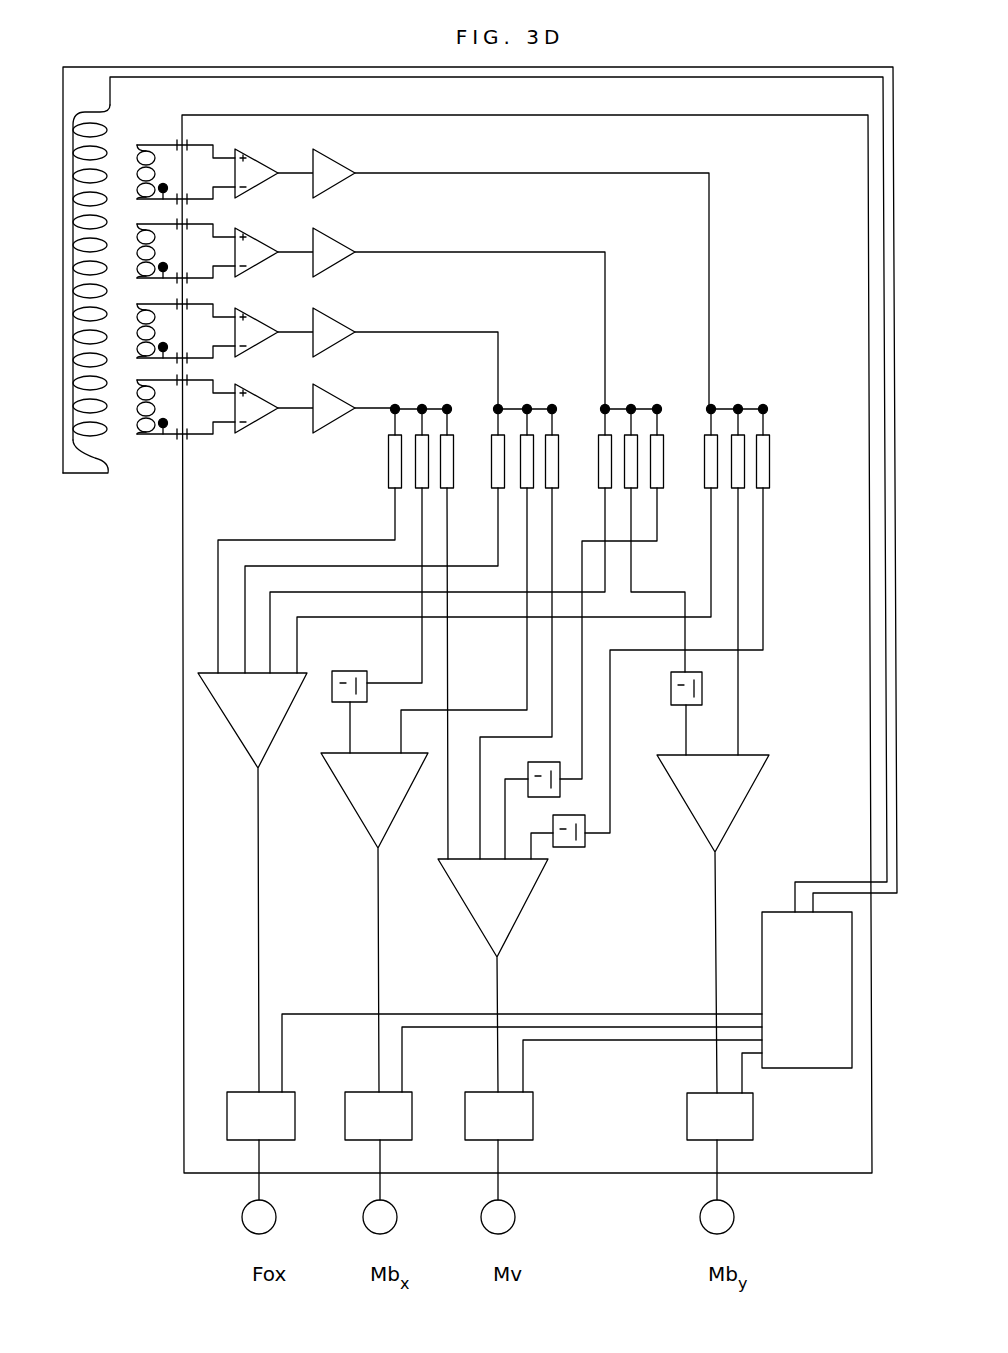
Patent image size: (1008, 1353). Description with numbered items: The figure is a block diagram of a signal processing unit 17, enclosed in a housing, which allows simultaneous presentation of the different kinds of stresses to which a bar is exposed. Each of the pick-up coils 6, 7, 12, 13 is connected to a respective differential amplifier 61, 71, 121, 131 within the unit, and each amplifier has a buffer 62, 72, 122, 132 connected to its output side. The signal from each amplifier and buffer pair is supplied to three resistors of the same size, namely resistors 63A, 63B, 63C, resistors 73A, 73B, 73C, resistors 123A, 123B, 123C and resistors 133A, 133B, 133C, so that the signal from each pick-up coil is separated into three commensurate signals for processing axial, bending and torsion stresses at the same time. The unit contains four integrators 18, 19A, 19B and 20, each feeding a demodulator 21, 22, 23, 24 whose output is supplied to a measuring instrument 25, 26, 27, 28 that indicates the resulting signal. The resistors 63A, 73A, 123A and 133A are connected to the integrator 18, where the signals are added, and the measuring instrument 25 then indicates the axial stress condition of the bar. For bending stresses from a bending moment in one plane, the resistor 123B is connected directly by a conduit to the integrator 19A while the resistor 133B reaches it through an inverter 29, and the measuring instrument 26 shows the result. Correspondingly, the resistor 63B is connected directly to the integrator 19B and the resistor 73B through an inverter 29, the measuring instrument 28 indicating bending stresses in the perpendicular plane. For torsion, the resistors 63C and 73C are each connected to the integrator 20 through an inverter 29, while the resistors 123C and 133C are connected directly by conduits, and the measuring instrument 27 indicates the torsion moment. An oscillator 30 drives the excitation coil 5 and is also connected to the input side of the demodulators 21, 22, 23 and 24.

The excitation coil 5 is at (93, 473).
The pick-up coil 6 is at (143, 152).
The pick-up coil 7 is at (143, 232).
The pick-up coil 12 is at (140, 322).
The pick-up coil 13 is at (138, 404).
The signal processing unit 17 is at (166, 758).
The integrator 18 is at (247, 728).
The integrator 19A is at (360, 798).
The integrator 19B is at (735, 805).
The integrator 20 is at (512, 902).
The demodulator 21 is at (240, 1106).
The demodulator 22 is at (356, 1105).
The demodulator 23 is at (478, 1105).
The demodulator 24 is at (695, 1112).
The measuring instrument 25 is at (262, 1235).
The measuring instrument 26 is at (384, 1236).
The measuring instrument 27 is at (498, 1236).
The measuring instrument 28 is at (716, 1236).
The inverter 29 is at (343, 671).
The oscillator 30 is at (775, 928).
The differential amplifier 61 is at (262, 168).
The buffer 62 is at (342, 170).
The differential amplifier 71 is at (258, 245).
The buffer 72 is at (338, 248).
The differential amplifier 121 is at (262, 325).
The buffer 122 is at (338, 325).
The differential amplifier 131 is at (262, 402).
The buffer 132 is at (338, 402).
The resistor 133A is at (394, 456).
The resistor 133B is at (422, 468).
The resistor 133C is at (447, 478).
The resistor 123A is at (490, 458).
The resistor 123B is at (518, 448).
The resistor 123C is at (548, 460).
The resistor 73A is at (600, 462).
The resistor 73B is at (628, 445).
The resistor 73C is at (654, 455).
The resistor 63A is at (708, 450).
The resistor 63B is at (735, 455).
The resistor 63C is at (805, 455).